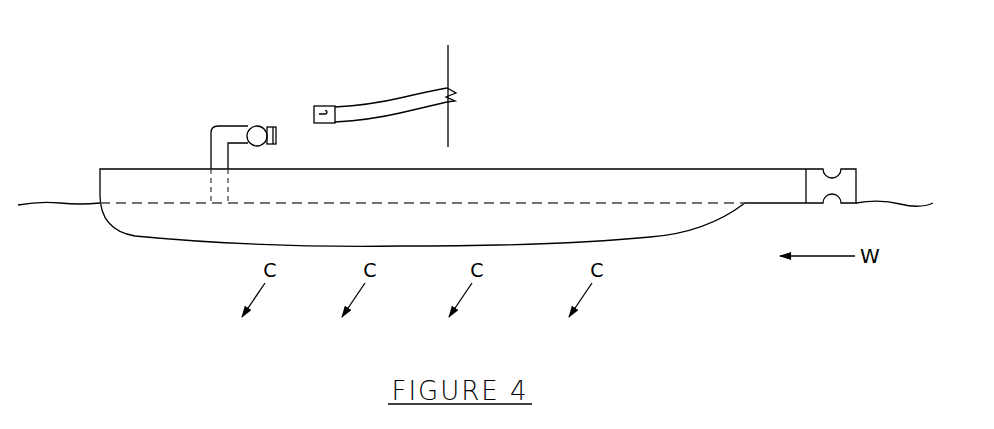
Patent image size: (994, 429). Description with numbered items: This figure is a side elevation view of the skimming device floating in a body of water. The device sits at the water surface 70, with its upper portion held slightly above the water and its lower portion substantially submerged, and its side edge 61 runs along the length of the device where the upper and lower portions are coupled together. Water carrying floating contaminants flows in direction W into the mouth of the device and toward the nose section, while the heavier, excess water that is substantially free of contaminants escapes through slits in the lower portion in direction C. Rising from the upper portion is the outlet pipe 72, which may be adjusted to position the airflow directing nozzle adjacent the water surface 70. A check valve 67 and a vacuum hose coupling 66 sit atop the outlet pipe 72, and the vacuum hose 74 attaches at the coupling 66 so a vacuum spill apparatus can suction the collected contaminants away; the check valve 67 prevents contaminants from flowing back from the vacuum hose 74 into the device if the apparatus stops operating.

The side edge 61 is at (561, 187).
The vacuum hose coupling 66 is at (274, 126).
The check valve 67 is at (256, 126).
The water surface 70 is at (78, 200).
The outlet pipe 72 is at (213, 128).
The vacuum hose 74 is at (394, 104).